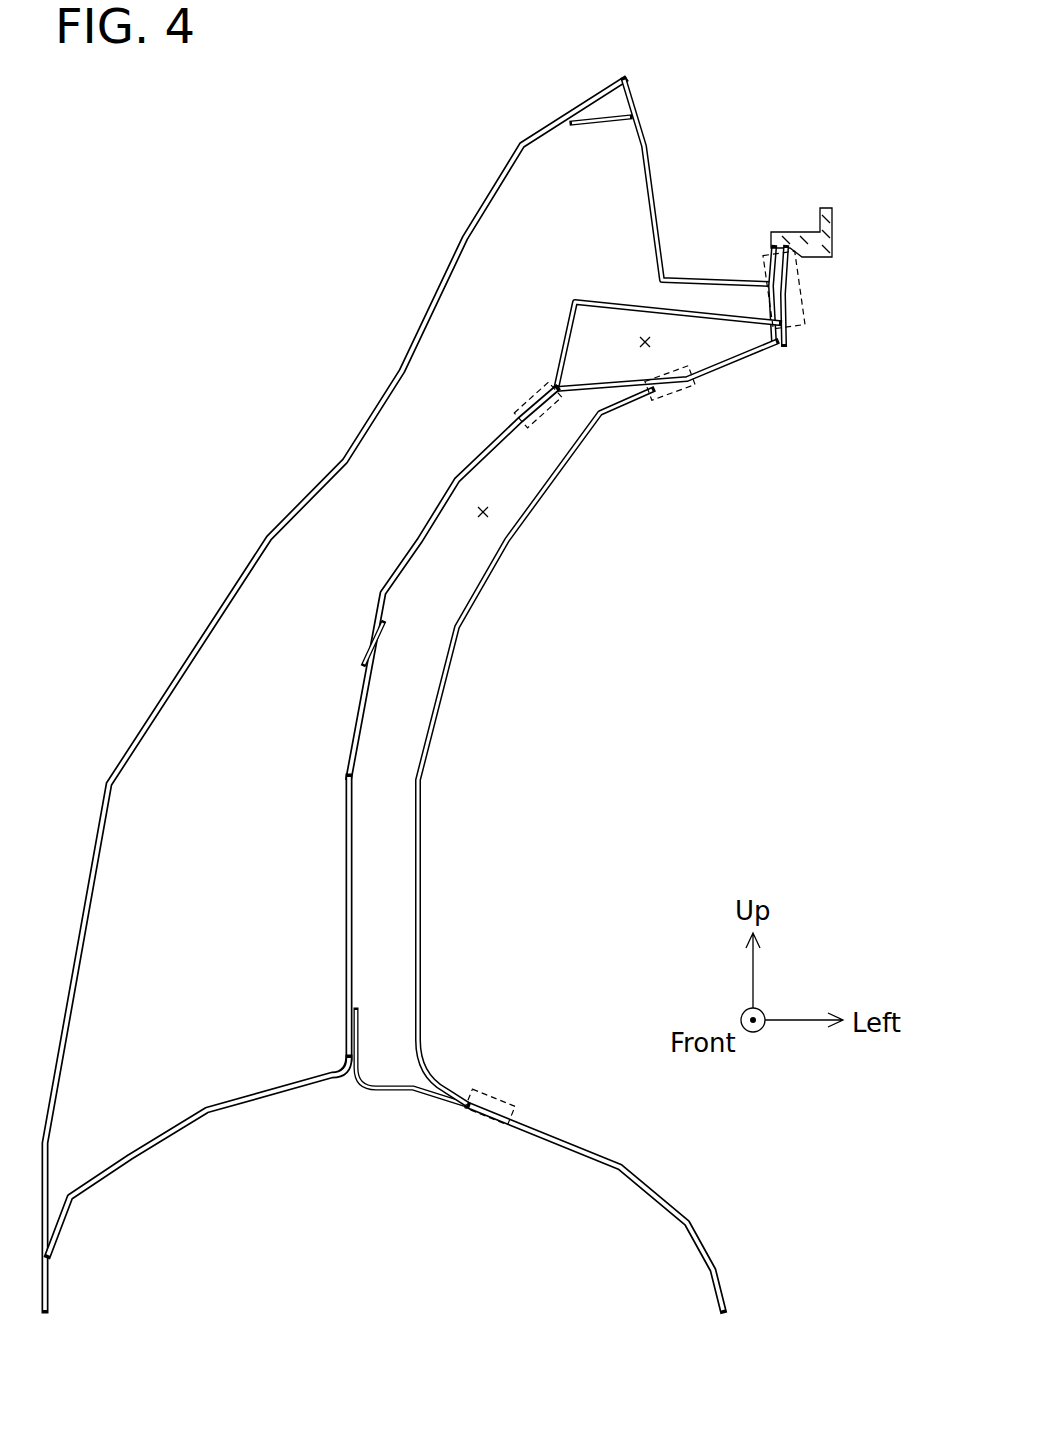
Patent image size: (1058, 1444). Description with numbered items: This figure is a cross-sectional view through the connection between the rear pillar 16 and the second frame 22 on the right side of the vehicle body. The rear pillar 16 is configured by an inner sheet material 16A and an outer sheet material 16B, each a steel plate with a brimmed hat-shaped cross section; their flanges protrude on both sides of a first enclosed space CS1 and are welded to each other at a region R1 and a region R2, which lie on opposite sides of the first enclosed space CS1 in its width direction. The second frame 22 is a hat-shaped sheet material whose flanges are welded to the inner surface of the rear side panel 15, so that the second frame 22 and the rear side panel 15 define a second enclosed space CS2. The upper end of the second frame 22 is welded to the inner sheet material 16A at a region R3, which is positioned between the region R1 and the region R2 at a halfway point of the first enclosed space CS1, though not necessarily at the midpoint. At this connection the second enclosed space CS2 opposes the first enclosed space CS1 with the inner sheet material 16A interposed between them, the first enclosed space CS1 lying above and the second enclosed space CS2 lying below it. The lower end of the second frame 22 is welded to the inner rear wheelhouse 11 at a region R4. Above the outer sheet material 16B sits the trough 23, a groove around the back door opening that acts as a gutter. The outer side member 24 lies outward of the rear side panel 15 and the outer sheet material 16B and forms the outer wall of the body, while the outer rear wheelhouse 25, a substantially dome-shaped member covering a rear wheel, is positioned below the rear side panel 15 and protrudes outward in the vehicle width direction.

The inner rear wheelhouse 11 is at (620, 1162).
The rear side panel 15 is at (473, 460).
The rear pillar 16 is at (736, 348).
The inner sheet material 16A is at (778, 347).
The outer sheet material 16B is at (708, 322).
The second frame 22 is at (482, 593).
The trough 23 is at (658, 177).
The outer side member 24 is at (492, 182).
The outer rear wheelhouse 25 is at (353, 842).
The region R1 is at (535, 388).
The region R2 is at (795, 297).
The region R3 is at (680, 393).
The region R4 is at (490, 1095).
The first enclosed space CS1 is at (643, 345).
The second enclosed space CS2 is at (486, 514).